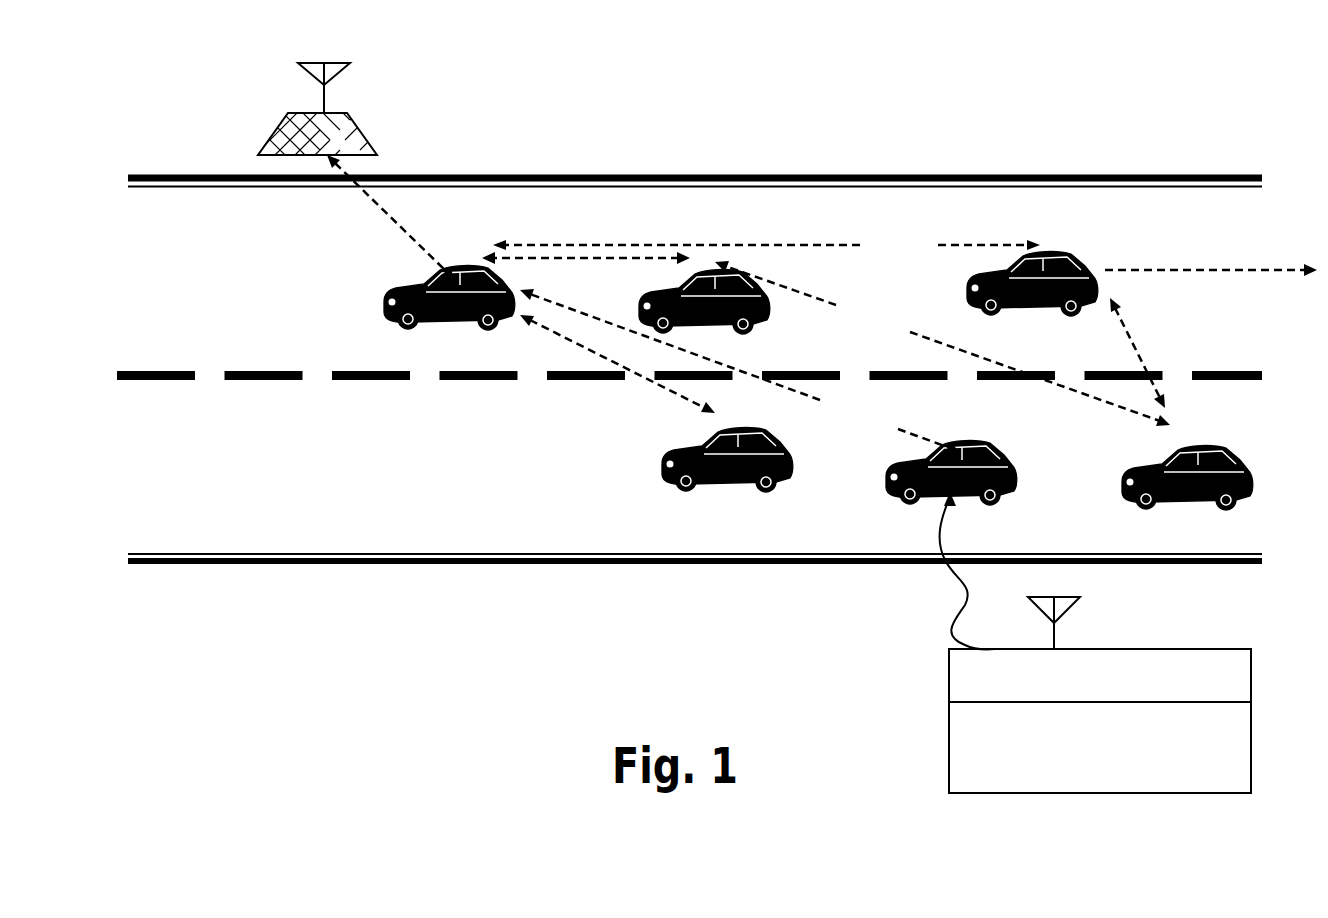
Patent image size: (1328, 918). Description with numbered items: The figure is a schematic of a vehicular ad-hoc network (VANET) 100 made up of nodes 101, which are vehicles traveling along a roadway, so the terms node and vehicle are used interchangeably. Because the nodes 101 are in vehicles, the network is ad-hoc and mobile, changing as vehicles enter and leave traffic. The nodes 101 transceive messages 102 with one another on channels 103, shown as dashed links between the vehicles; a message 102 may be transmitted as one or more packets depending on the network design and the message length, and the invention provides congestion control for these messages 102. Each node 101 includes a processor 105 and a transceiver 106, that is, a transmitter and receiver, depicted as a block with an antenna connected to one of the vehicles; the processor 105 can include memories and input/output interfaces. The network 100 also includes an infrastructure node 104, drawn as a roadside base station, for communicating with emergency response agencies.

The vehicular ad-hoc network (VANET) 100 is at (718, 848).
The node 101 is at (703, 266).
The message 102 is at (826, 336).
The channel 103 is at (1185, 270).
The infrastructure node 104 is at (330, 110).
The processor 105 is at (1202, 649).
The transceiver 106 is at (1187, 793).